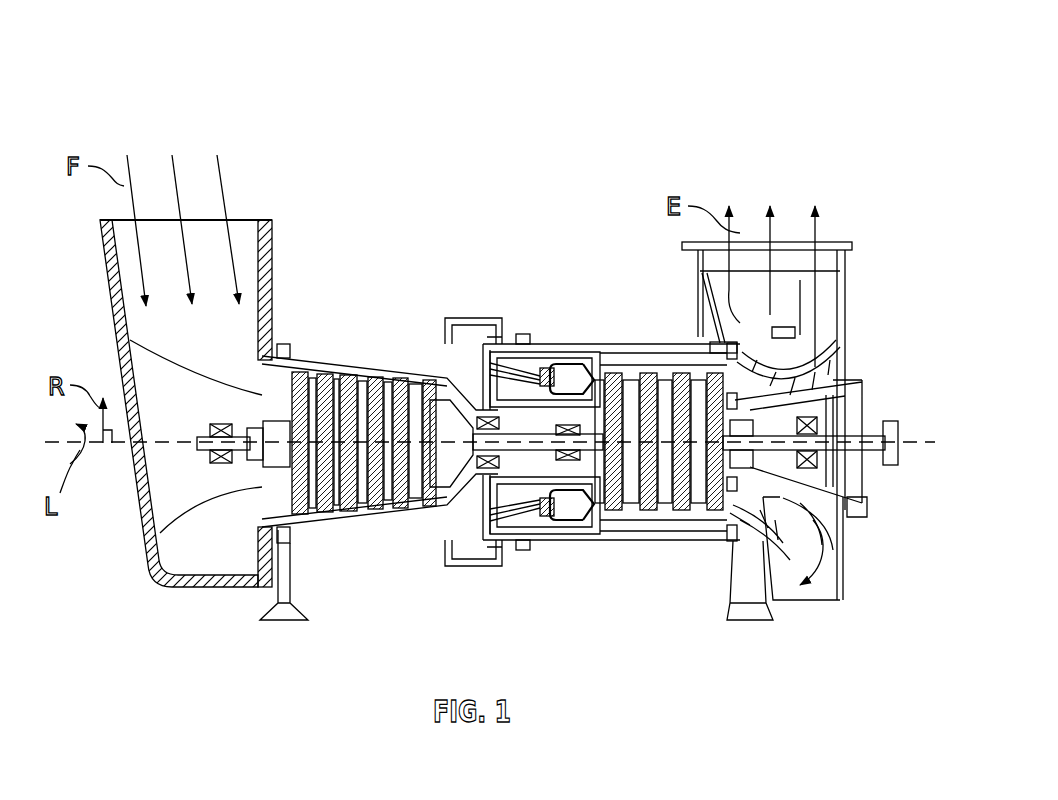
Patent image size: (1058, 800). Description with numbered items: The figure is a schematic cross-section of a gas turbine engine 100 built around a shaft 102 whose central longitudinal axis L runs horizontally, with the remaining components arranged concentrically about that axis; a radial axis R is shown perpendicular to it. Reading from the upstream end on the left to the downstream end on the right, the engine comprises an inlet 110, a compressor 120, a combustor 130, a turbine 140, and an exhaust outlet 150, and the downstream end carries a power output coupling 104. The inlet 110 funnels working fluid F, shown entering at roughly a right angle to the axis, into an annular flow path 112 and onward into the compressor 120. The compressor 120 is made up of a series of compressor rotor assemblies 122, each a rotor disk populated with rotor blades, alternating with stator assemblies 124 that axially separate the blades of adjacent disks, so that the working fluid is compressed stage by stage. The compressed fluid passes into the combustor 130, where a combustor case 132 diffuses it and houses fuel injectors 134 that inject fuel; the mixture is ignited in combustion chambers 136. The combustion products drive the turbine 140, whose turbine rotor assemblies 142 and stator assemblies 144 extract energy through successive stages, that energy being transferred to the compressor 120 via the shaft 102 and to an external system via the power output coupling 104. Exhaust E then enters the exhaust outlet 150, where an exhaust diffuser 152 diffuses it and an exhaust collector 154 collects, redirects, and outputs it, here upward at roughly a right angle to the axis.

The gas turbine engine 100 is at (122, 32).
The shaft 102 is at (204, 436).
The power output coupling 104 is at (892, 421).
The inlet 110 is at (267, 132).
The annular flow path 112 is at (258, 370).
The compressor 120 is at (470, 132).
The compressor rotor assembly 122 is at (320, 516).
The stator assembly 124 is at (360, 372).
The combustor 130 is at (590, 132).
The combustor case 132 is at (528, 360).
The fuel injector 134 is at (520, 342).
The combustion chamber 136 is at (576, 364).
The turbine 140 is at (725, 132).
The turbine rotor assembly 142 is at (700, 512).
The stator assembly 144 is at (684, 370).
The exhaust outlet 150 is at (870, 156).
The exhaust diffuser 152 is at (745, 357).
The exhaust collector 154 is at (703, 276).